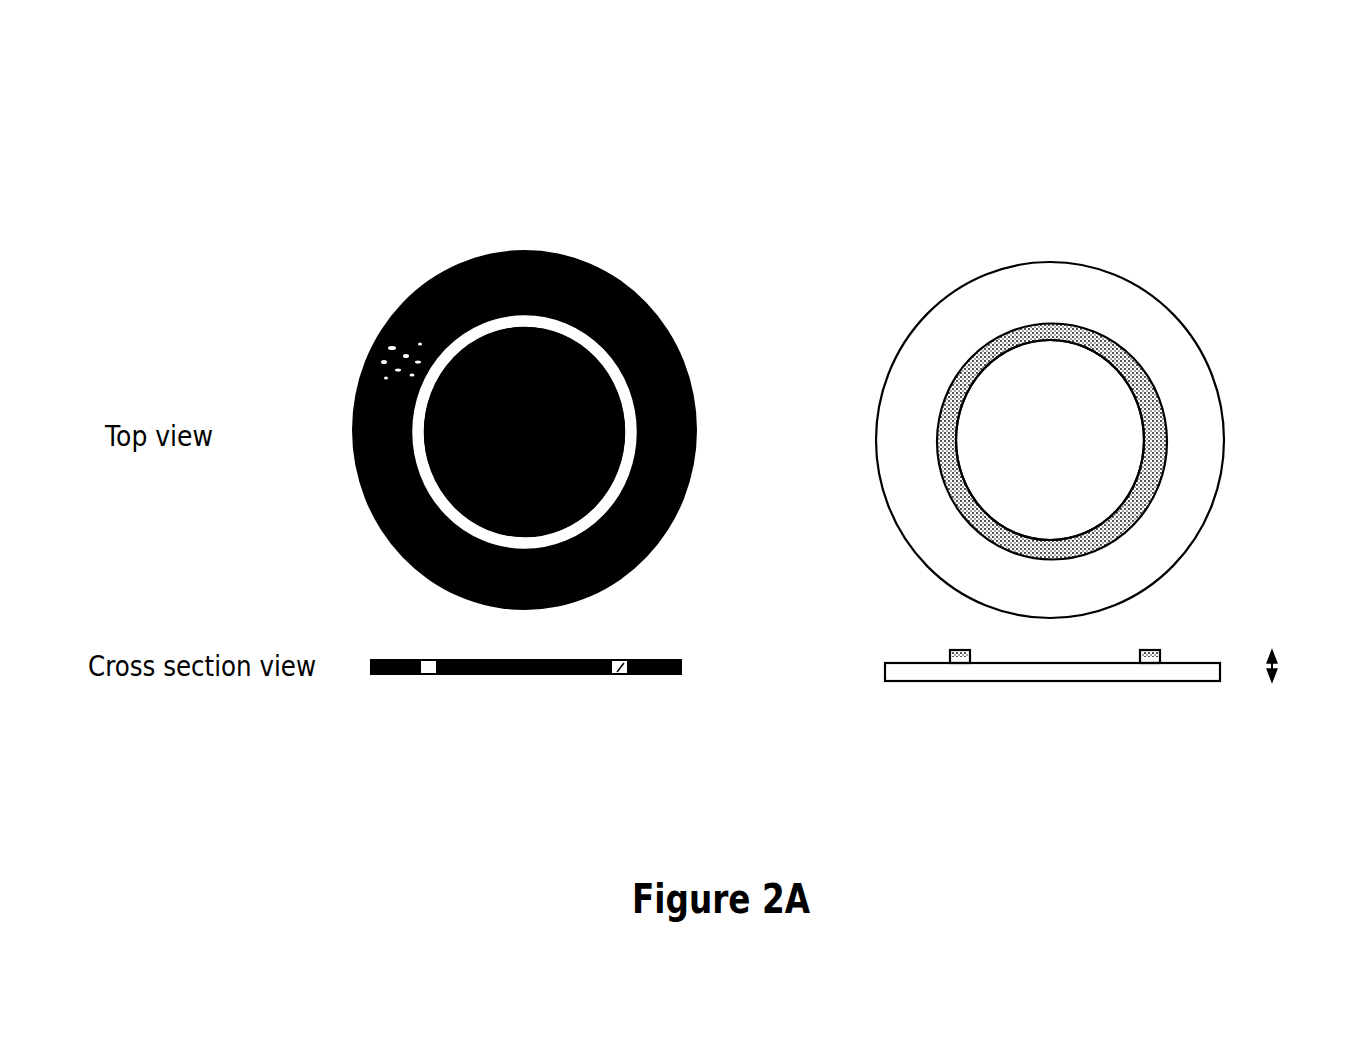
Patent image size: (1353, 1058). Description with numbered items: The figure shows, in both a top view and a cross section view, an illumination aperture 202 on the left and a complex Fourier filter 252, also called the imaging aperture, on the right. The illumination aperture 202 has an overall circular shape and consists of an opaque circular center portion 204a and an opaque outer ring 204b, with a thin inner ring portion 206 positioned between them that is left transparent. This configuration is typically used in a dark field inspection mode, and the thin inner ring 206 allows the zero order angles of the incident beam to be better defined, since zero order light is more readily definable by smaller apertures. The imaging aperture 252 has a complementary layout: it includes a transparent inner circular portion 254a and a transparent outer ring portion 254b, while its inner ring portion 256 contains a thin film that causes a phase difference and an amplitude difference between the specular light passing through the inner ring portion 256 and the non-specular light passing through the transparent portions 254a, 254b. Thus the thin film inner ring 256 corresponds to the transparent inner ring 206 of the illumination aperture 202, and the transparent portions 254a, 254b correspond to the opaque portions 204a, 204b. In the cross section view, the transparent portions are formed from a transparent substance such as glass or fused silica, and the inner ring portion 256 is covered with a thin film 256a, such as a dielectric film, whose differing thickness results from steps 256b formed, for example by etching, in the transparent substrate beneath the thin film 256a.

The illumination aperture 202 is at (662, 255).
The opaque circular center portion 204a is at (443, 367).
The opaque outer ring 204b is at (368, 508).
The inner ring portion 206 is at (406, 405).
The complex Fourier filter 252 is at (1237, 275).
The transparent inner circular portion 254a is at (1003, 436).
The transparent outer ring portion 254b is at (905, 500).
The inner ring portion 256 is at (978, 350).
The thin film 256a is at (1148, 652).
The steps 256b is at (1160, 655).